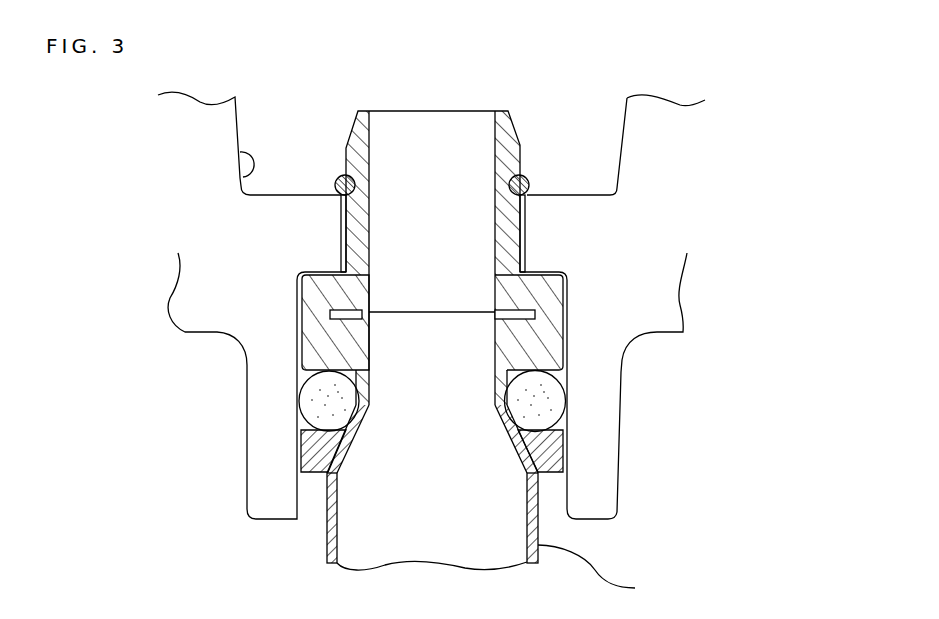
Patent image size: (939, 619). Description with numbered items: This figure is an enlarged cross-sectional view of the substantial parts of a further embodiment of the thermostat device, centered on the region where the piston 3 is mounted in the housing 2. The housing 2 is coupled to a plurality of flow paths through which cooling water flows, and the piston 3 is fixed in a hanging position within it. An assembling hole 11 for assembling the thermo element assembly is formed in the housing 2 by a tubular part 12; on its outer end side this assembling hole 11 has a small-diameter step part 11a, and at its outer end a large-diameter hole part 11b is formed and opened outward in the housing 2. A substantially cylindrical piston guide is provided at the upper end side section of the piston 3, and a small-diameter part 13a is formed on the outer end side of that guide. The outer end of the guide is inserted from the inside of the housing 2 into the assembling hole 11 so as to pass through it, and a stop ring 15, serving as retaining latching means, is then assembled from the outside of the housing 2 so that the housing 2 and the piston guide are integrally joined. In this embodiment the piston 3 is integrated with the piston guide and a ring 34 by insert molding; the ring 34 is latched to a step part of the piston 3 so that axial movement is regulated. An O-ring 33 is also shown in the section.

The housing 2 is at (177, 163).
The piston 3 is at (375, 531).
The assembling hole 11 is at (423, 261).
The small-diameter step part 11a is at (322, 224).
The large-diameter hole part 11b is at (240, 152).
The tubular part 12 is at (258, 441).
The small-diameter part 13a is at (508, 134).
The stop ring 15 is at (528, 182).
The O-ring 33 is at (553, 384).
The ring 34 is at (560, 449).